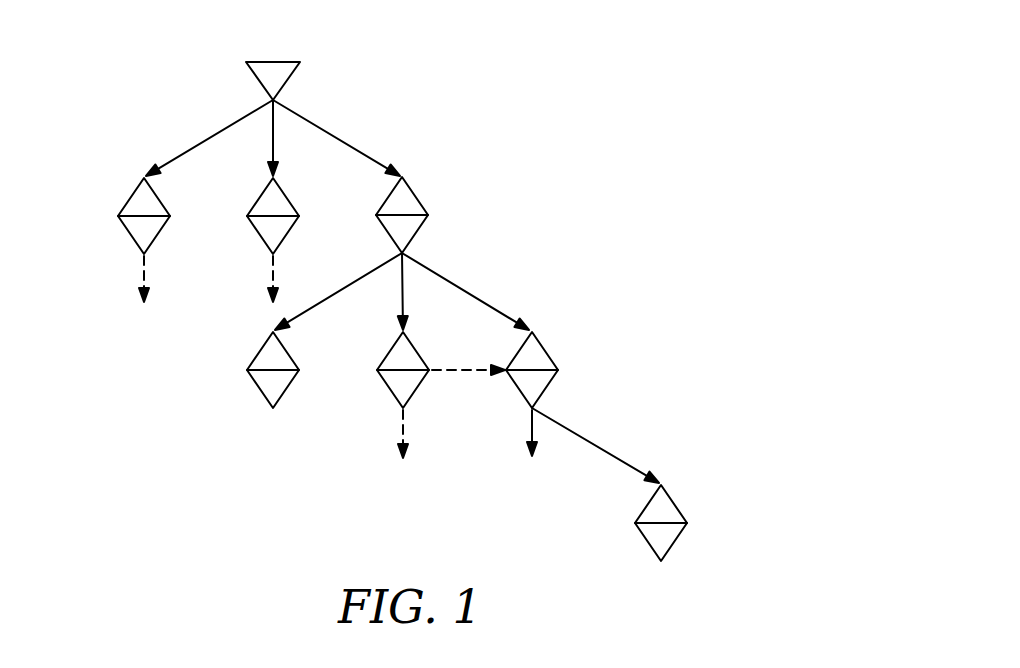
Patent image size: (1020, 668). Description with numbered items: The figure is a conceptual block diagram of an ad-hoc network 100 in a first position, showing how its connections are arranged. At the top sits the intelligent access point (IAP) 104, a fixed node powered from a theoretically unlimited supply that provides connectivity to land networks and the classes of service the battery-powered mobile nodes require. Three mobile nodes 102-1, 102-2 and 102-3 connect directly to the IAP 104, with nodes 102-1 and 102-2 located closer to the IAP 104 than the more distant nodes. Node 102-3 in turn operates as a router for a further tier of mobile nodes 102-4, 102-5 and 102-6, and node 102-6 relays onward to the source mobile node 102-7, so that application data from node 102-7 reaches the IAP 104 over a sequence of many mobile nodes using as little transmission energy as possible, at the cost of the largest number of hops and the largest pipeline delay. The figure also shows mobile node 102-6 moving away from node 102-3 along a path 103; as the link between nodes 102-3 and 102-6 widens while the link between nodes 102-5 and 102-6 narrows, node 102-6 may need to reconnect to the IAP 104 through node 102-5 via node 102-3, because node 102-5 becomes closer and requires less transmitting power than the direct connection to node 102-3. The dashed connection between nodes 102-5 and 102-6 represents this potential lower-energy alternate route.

The ad-hoc network 100 is at (628, 60).
The mobile node 102-1 is at (131, 195).
The mobile node 102-2 is at (260, 195).
The mobile node 102-3 is at (415, 195).
The mobile node 102-4 is at (260, 349).
The mobile node 102-5 is at (390, 349).
The mobile node 102-6 is at (545, 349).
The source mobile node 102-7 is at (674, 502).
The path 103 is at (530, 429).
The intelligent access point (IAP) 104 is at (262, 62).